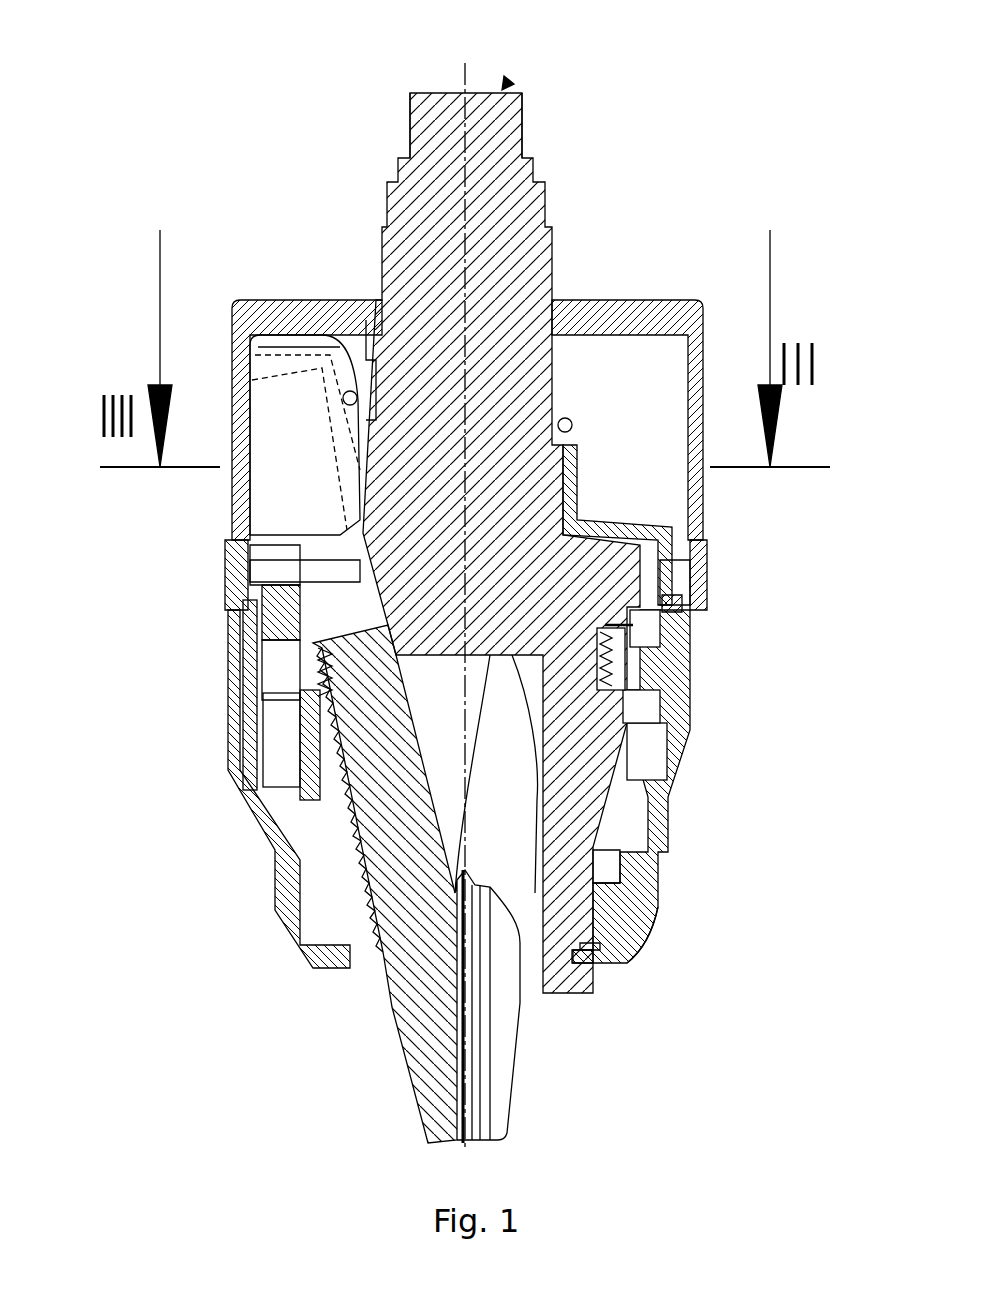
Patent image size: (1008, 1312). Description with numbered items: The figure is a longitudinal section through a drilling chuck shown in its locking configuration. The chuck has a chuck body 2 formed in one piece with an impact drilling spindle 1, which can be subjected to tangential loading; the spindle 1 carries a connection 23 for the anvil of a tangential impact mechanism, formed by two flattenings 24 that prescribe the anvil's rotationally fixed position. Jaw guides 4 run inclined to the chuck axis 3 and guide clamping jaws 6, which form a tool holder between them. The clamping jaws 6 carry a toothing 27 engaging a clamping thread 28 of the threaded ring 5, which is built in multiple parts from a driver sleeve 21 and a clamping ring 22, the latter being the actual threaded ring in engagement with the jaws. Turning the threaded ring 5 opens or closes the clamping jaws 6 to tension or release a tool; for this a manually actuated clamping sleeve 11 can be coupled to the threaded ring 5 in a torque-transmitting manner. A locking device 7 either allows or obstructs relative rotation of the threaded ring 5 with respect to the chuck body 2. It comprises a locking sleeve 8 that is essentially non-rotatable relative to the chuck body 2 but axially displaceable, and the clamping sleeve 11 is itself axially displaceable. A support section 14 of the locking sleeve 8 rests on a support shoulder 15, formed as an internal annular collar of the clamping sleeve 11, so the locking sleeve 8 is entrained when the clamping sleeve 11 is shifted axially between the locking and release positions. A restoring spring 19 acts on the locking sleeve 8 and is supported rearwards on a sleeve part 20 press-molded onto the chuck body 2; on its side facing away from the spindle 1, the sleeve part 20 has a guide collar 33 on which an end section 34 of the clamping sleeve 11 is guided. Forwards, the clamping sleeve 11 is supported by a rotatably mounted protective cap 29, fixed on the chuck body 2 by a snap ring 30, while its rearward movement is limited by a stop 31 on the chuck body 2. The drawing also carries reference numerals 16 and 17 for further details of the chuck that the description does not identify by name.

The impact drilling spindle 1 is at (527, 283).
The chuck body 2 is at (410, 522).
The chuck axis 3 is at (466, 80).
The jaw guides 4 is at (372, 580).
The threaded ring 5 is at (730, 661).
The clamping jaws 6 is at (415, 993).
The locking device 7 is at (676, 528).
The locking sleeve 8 is at (360, 460).
The clamping sleeve 11 is at (670, 793).
The support section 14 is at (250, 600).
The support shoulder 15 is at (687, 603).
The ball 16 is at (372, 402).
The groove 17 is at (377, 372).
The restoring spring 19 is at (566, 418).
The sleeve part 20 is at (245, 330).
The driver sleeve 21 is at (667, 655).
The clamping ring 22 is at (623, 675).
The connection 23 is at (505, 86).
The flattenings 24 is at (410, 120).
The toothing 27 is at (357, 782).
The clamping thread 28 is at (330, 683).
The protective cap 29 is at (650, 935).
The snap ring 30 is at (580, 955).
The stop 31 is at (596, 852).
The guide collar 33 is at (690, 527).
The end section 34 is at (703, 558).